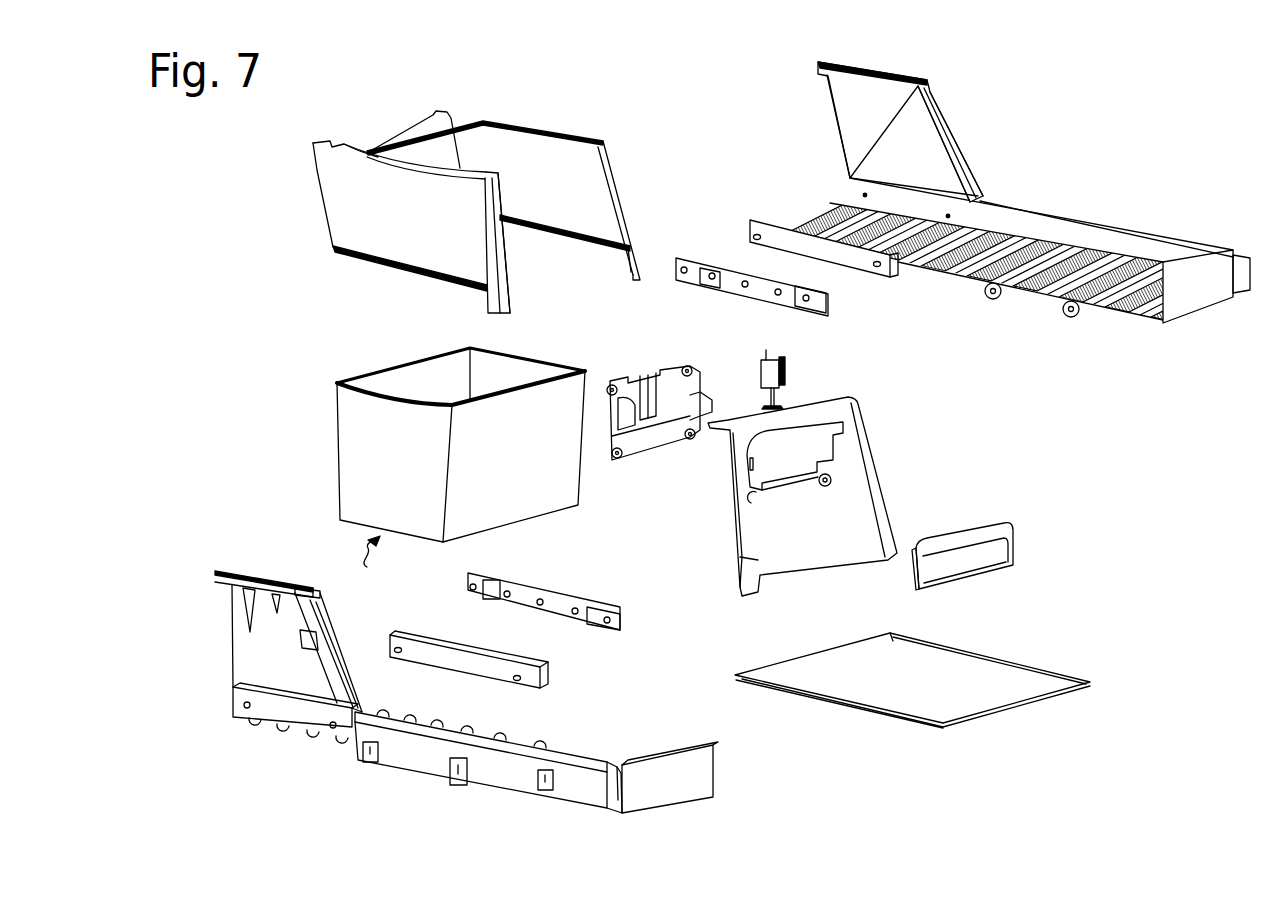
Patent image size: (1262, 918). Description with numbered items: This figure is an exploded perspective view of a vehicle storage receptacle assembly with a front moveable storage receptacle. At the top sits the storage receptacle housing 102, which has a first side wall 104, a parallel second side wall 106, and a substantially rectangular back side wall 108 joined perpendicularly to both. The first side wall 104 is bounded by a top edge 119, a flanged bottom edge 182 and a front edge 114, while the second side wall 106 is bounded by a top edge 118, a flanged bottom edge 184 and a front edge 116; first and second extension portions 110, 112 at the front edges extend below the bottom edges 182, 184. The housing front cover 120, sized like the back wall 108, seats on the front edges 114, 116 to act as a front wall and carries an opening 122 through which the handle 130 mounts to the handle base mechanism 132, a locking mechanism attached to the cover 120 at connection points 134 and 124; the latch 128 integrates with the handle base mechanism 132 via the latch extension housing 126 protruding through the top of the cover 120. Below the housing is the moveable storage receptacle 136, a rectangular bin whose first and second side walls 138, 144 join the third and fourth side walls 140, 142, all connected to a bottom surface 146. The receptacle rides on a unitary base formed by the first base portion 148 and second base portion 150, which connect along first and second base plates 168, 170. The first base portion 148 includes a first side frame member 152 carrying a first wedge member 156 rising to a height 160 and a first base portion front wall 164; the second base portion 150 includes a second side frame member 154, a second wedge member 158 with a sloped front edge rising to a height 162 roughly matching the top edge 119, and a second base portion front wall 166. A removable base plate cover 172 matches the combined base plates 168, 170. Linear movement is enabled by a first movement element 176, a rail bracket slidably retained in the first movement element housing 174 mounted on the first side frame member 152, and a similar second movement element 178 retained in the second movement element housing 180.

The storage receptacle housing 102 is at (478, 208).
The first side wall 104 is at (375, 219).
The second side wall 106 is at (590, 180).
The back side wall 108 is at (433, 150).
The first extension portion 110 is at (483, 303).
The second extension portion 112 is at (627, 268).
The front edge of first side wall 114 is at (503, 277).
The front edge of second side wall 116 is at (627, 223).
The top edge of second side wall 118 is at (523, 133).
The top edge of first side wall 119 is at (400, 163).
The storage receptacle housing front cover 120 is at (826, 496).
The opening 122 is at (808, 447).
The connection points 124 is at (755, 493).
The latch extension housing 126 is at (791, 358).
The latch 128 is at (773, 355).
The handle 130 is at (1002, 537).
The handle base mechanism 132 is at (662, 414).
The connection points 134 is at (617, 458).
The moveable storage receptacle 136 is at (426, 437).
The first side wall of moveable storage receptacle 138 is at (513, 503).
The third side wall of moveable storage receptacle 140 is at (518, 373).
The fourth side wall of moveable storage receptacle 142 is at (353, 472).
The second side wall of moveable storage receptacle 144 is at (378, 385).
The bottom surface 146 is at (367, 567).
The first receptacle assembly base portion 148 is at (884, 129).
The second receptacle assembly base portion 150 is at (259, 636).
The first side frame member 152 is at (1003, 203).
The second elongated side frame member 154 is at (564, 751).
The first wedge member 156 is at (965, 158).
The second wedge member 158 is at (250, 660).
The height of first wedge member 160 is at (893, 73).
The height of second wedge member 162 is at (270, 573).
The first base portion front wall 164 is at (1193, 298).
The second base portion front wall 166 is at (702, 775).
The first base plate 168 is at (1122, 312).
The second base plate 170 is at (440, 723).
The base plate cover 172 is at (1025, 665).
The first movement element housing 174 is at (882, 265).
The first movement element 176 is at (830, 298).
The second movement element 178 is at (623, 620).
The second movement element housing 180 is at (545, 677).
The bottom edge of first side wall 182 is at (403, 268).
The bottom edge of second side wall 184 is at (583, 240).